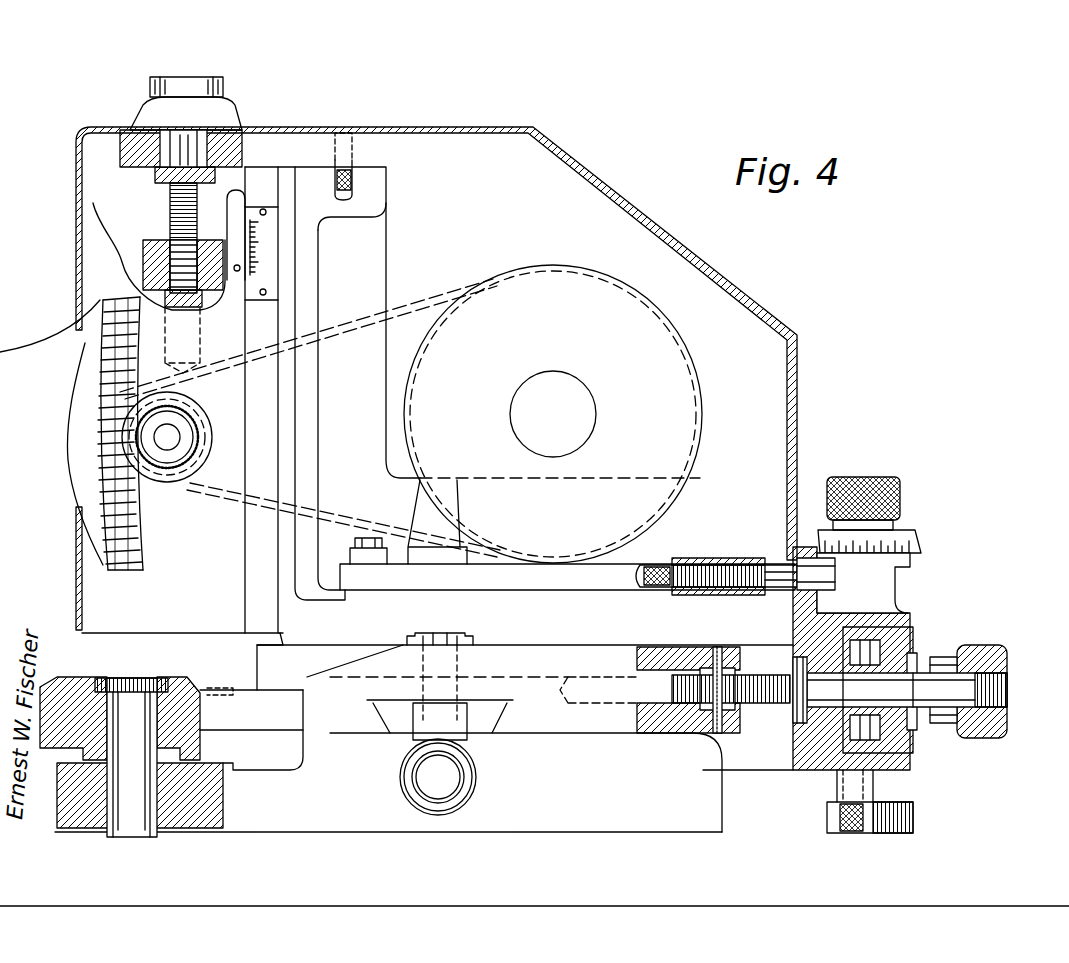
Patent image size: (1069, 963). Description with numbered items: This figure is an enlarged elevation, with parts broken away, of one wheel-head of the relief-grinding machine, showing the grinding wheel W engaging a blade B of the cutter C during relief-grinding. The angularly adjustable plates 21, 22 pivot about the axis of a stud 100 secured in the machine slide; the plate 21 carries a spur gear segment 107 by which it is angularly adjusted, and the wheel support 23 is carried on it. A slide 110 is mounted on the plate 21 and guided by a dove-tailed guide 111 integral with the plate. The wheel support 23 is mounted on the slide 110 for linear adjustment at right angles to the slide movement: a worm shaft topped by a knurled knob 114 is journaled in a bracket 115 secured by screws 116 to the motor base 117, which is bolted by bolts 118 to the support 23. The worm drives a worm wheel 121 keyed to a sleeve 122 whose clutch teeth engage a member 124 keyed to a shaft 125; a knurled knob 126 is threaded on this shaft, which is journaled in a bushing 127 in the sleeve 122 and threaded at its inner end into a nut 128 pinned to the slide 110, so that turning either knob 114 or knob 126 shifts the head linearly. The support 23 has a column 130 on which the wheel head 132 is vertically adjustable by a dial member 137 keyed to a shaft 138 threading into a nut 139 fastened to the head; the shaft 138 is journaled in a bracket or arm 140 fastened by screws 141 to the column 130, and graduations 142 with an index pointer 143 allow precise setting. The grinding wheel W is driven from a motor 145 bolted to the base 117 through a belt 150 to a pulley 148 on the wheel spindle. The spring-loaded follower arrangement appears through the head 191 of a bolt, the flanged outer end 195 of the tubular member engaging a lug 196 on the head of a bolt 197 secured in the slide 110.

The dial member 137 is at (223, 93).
The bracket or arm 140 is at (297, 150).
The shaft 138 is at (150, 168).
The nut 139 is at (158, 262).
The screws 141 is at (348, 187).
The graduations 142 is at (265, 250).
The index pointer 143 is at (240, 290).
The belt 150 is at (362, 300).
The pulley 148 is at (235, 399).
The column or upright 130 is at (303, 420).
The motor 145 is at (677, 410).
The bolts 118 is at (367, 540).
The motor base 117 is at (548, 580).
The screws 116 is at (767, 563).
The knurled grip or knob 114 is at (900, 497).
The bracket 115 is at (887, 587).
The bushing 127 is at (917, 657).
The member 124 is at (947, 652).
The knurled knob 126 is at (993, 667).
The shaft 125 is at (967, 693).
The sleeve 122 is at (893, 737).
The nut 128 is at (735, 710).
The worm wheel 121 is at (830, 757).
The spur gear segment 107 is at (915, 813).
The bolt 197 is at (437, 663).
The dove-tailed guide 111 is at (487, 713).
The lug 196 is at (437, 720).
The flanged outer end 195 is at (463, 763).
The head 191 is at (437, 790).
The plate 21 is at (388, 761).
The plate 22 is at (50, 687).
The wheel head 132 is at (130, 613).
The stud 100 is at (143, 687).
The wheel support 23 is at (293, 632).
The slide 110 is at (273, 713).
The blade B is at (93, 340).
The grinding wheel W is at (187, 450).
The cutter C is at (142, 540).